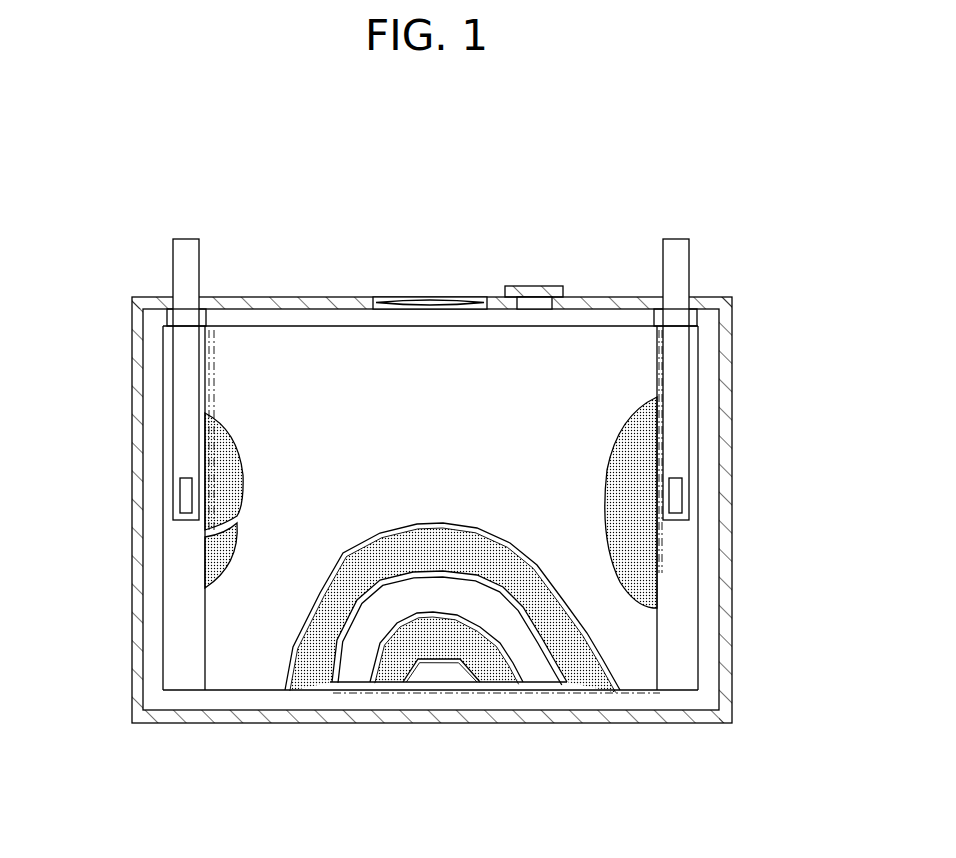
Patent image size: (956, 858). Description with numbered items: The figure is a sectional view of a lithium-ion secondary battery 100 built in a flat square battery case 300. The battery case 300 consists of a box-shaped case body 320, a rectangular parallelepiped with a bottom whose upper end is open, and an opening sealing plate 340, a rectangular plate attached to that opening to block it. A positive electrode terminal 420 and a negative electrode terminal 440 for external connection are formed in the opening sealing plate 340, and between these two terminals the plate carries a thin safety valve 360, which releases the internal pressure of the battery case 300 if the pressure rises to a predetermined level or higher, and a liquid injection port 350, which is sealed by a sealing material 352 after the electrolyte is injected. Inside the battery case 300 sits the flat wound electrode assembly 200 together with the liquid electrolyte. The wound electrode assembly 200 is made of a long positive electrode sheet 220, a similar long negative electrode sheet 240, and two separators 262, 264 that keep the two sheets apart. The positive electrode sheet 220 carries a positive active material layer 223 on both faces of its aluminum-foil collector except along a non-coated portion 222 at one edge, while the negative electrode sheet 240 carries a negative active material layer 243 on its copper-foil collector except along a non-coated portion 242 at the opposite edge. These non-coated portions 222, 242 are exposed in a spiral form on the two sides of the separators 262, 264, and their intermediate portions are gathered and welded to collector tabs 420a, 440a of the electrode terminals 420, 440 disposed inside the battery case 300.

The lithium-ion secondary battery 100 is at (732, 258).
The wound electrode assembly 200 is at (308, 358).
The positive electrode sheet 220 is at (393, 672).
The non-coated portion 222 is at (180, 663).
The positive active material layer 223 is at (230, 470).
The negative electrode sheet 240 is at (205, 573).
The non-coated portion 242 is at (683, 553).
The negative active material layer 243 is at (232, 558).
The separator 262 is at (245, 617).
The separator 264 is at (205, 535).
The battery case 300 is at (733, 415).
The case body 320 is at (732, 695).
The opening sealing plate 340 is at (620, 297).
The liquid injection port 350 is at (542, 264).
The sealing material 352 is at (527, 286).
The safety valve 360 is at (432, 297).
The positive electrode terminal 420 is at (187, 247).
The collector tab 420a is at (180, 485).
The negative electrode terminal 440 is at (677, 247).
The collector tab 440a is at (683, 487).